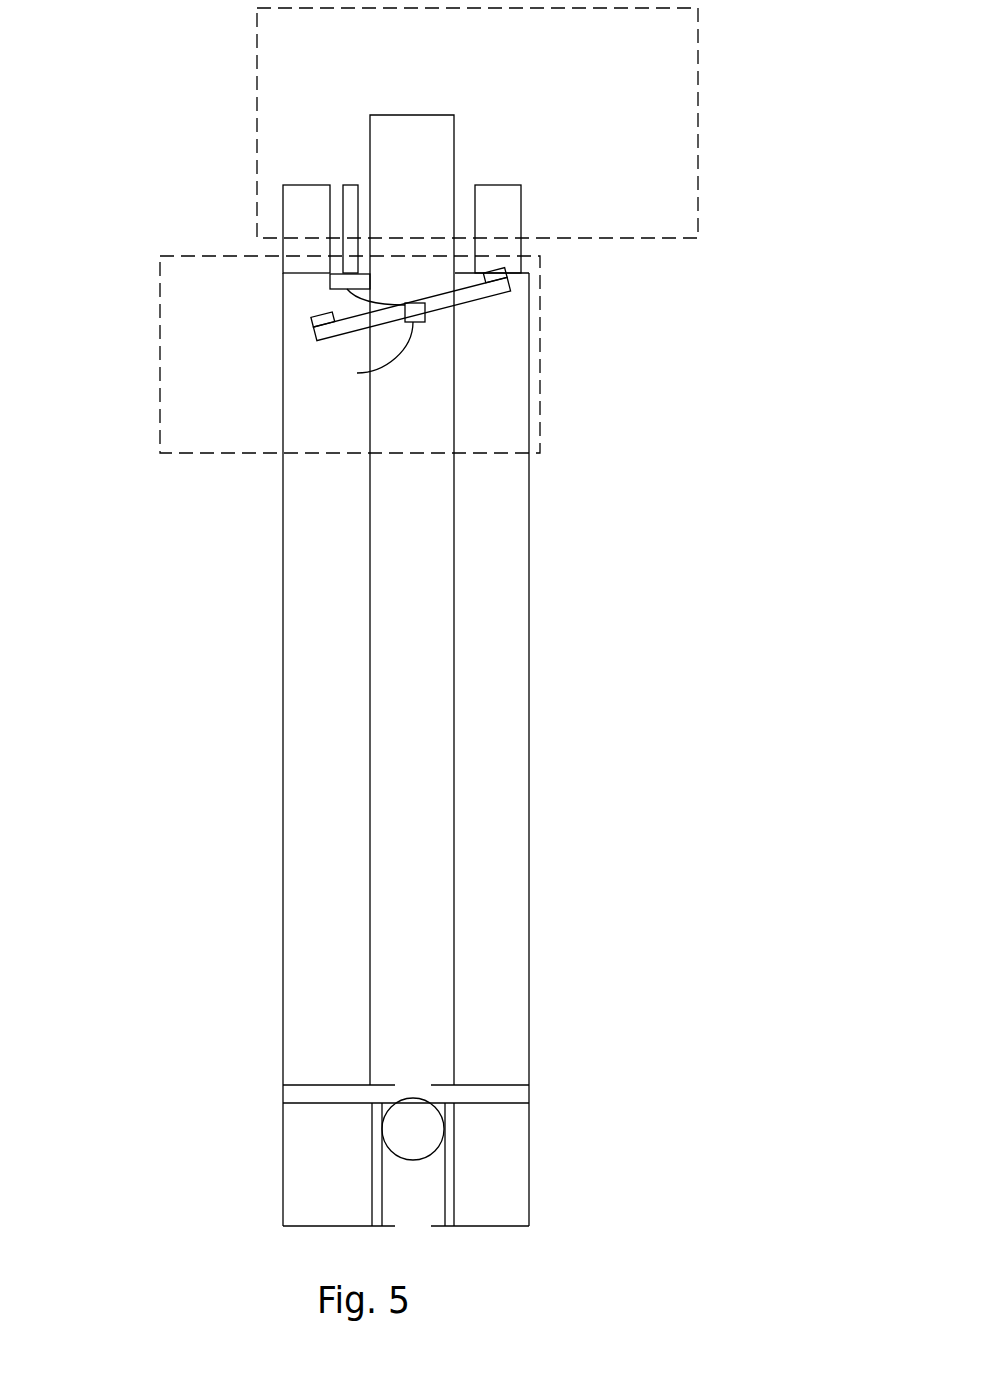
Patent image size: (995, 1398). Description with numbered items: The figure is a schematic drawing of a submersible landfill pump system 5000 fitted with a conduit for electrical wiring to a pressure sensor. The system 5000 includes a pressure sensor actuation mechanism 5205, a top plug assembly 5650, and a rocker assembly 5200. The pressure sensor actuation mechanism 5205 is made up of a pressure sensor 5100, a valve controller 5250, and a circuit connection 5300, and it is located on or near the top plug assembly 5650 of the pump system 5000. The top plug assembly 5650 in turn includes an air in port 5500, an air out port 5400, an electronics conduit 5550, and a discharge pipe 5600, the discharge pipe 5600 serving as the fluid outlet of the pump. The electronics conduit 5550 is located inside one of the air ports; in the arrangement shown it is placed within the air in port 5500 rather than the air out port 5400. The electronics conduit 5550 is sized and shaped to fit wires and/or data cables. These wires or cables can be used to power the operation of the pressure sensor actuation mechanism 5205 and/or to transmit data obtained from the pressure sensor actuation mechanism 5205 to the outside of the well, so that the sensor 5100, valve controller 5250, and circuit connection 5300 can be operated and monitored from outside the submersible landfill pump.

The submersible landfill pump system 5000 is at (205, 731).
The pressure sensor 5100 is at (330, 289).
The rocker assembly 5200 is at (476, 300).
The pressure sensor actuation mechanism 5205 is at (160, 397).
The valve controller 5250 is at (357, 373).
The circuit connection 5300 is at (403, 305).
The air out port 5400 is at (521, 232).
The air in port 5500 is at (318, 197).
The electronics conduit 5550 is at (347, 186).
The discharge pipe 5600 is at (433, 678).
The top plug assembly 5650 is at (433, 168).